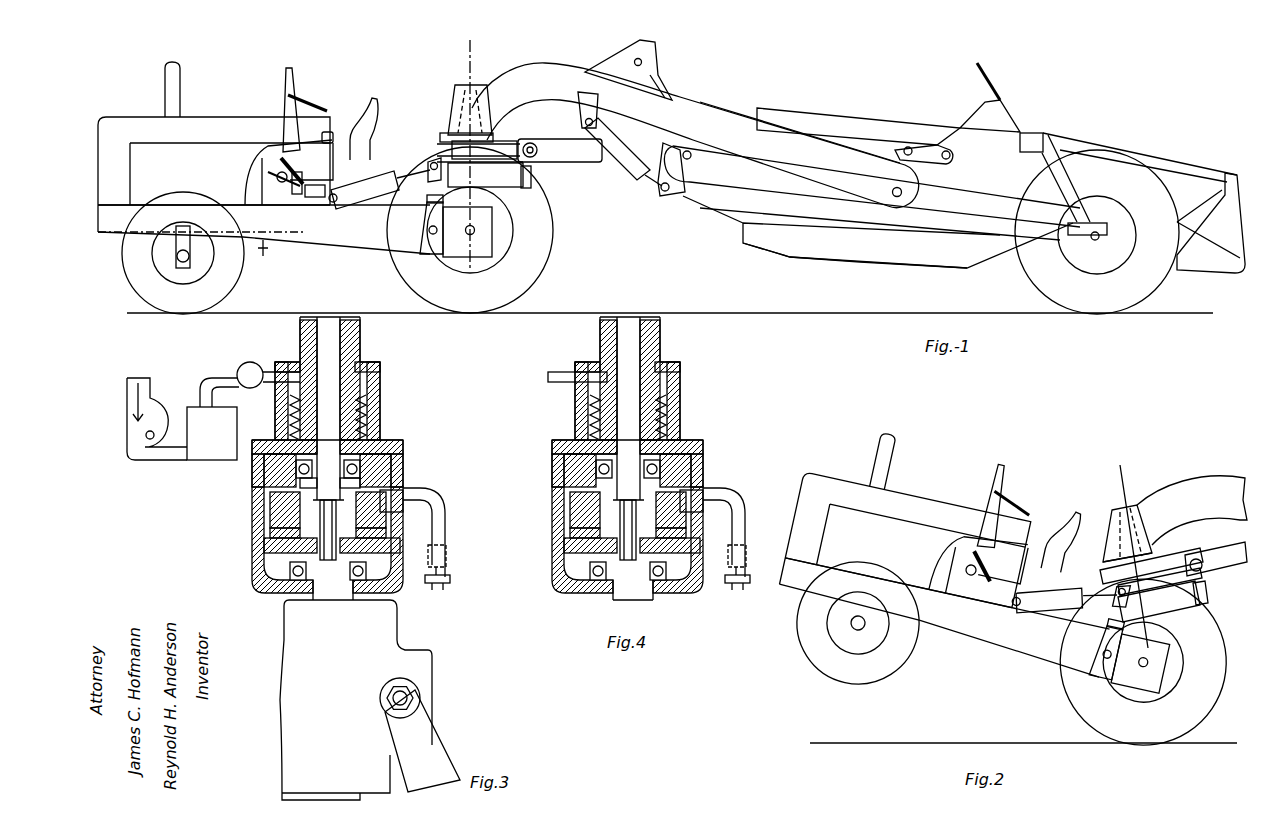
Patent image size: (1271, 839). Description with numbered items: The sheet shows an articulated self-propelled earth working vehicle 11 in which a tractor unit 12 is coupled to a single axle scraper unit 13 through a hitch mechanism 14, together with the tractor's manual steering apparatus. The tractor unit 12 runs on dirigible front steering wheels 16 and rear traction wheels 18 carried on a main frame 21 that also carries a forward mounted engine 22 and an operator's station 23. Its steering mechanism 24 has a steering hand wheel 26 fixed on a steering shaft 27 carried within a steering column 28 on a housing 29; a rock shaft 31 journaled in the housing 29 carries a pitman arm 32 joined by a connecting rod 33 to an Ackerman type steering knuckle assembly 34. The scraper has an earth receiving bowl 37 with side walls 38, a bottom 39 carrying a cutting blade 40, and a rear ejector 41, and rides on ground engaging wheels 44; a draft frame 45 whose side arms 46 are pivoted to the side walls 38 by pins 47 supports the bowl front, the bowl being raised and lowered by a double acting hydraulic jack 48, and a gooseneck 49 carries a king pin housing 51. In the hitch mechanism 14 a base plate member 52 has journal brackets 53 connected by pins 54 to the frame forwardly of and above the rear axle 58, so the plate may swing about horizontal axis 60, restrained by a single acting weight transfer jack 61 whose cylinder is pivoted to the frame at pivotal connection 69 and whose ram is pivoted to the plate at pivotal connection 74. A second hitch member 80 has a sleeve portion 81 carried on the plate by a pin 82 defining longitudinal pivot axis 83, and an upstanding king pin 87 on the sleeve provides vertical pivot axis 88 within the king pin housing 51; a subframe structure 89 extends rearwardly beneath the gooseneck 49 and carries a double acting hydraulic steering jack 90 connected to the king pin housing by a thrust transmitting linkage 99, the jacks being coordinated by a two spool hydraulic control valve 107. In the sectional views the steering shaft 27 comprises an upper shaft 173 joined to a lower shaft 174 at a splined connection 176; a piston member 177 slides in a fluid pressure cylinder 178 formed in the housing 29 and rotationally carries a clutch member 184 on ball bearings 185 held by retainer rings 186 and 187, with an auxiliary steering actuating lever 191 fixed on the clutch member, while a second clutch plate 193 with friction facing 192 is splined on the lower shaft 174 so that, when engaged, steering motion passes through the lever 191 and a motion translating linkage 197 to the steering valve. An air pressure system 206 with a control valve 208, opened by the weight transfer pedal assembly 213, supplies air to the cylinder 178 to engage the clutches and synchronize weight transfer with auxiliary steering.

In FIG. 1, the articulated self-propelled earth working vehicle 11 is at (656, 258).
In FIG. 1, the tractor unit 12 is at (125, 117).
In FIG. 2, the tractor unit 12 is at (830, 472).
In FIG. 1, the scraper unit 13 is at (872, 266).
In FIG. 1, the hitch mechanism 14 is at (455, 85).
In FIG. 2, the hitch mechanism 14 is at (1205, 612).
In FIG. 1, the front dirigible steering wheels 16 is at (127, 290).
In FIG. 2, the front dirigible steering wheels 16 is at (810, 655).
In FIG. 1, the driving or traction wheels 18 is at (535, 292).
In FIG. 2, the driving or traction wheels 18 is at (1080, 717).
In FIG. 1, the main frame 21 is at (326, 252).
In FIG. 2, the main frame 21 is at (978, 647).
In FIG. 1, the engine 22 is at (175, 152).
In FIG. 2, the engine 22 is at (890, 505).
In FIG. 1, the operator's station 23 is at (370, 100).
In FIG. 2, the operator's station 23 is at (1060, 515).
In FIG. 1, the steering mechanism 24 is at (262, 150).
In FIG. 2, the steering mechanism 24 is at (1012, 540).
In FIG. 3, the steering mechanism 24 is at (437, 652).
In FIG. 4, the steering mechanism 24 is at (556, 580).
In FIG. 1, the steering hand wheel 26 is at (300, 95).
In FIG. 2, the steering hand wheel 26 is at (1008, 500).
In FIG. 3, the steering post or shaft 27 is at (342, 333).
In FIG. 4, the steering post or shaft 27 is at (642, 333).
In FIG. 1, the steering column 28 is at (328, 132).
In FIG. 3, the steering column 28 is at (300, 321).
In FIG. 4, the steering column 28 is at (600, 321).
In FIG. 3, the housing 29 is at (403, 448).
In FIG. 4, the housing 29 is at (690, 368).
In FIG. 1, the rock shaft 31 is at (277, 180).
In FIG. 3, the rock shaft 31 is at (385, 702).
In FIG. 1, the pitman arm 32 is at (278, 205).
In FIG. 3, the pitman arm 32 is at (440, 748).
In FIG. 1, the connecting rod 33 is at (263, 252).
In FIG. 1, the steering knuckle assembly 34 is at (178, 232).
In FIG. 1, the earth receiving bowl 37 is at (900, 118).
In FIG. 1, the side walls 38 is at (735, 222).
In FIG. 1, the bottom 39 is at (940, 266).
In FIG. 1, the cutting blade 40 is at (790, 268).
In FIG. 1, the ejector 41 is at (1015, 120).
In FIG. 1, the ground engaging wheels 44 is at (1032, 286).
In FIG. 1, the yoke or draft frame 45 is at (712, 103).
In FIG. 1, the side arms 46 is at (790, 172).
In FIG. 1, the pins 47 is at (903, 192).
In FIG. 1, the double acting hydraulic jack 48 is at (660, 190).
In FIG. 1, the gooseneck 49 is at (546, 65).
In FIG. 2, the gooseneck 49 is at (1210, 477).
In FIG. 1, the king pin housing 51 is at (450, 97).
In FIG. 2, the king pin housing 51 is at (1112, 520).
In FIG. 1, the base plate member 52 is at (427, 205).
In FIG. 2, the base plate member 52 is at (1098, 622).
In FIG. 1, the journal brackets 53 is at (427, 231).
In FIG. 2, the journal brackets 53 is at (1105, 655).
In FIG. 1, the pins 54 is at (429, 263).
In FIG. 2, the pins 54 is at (1105, 672).
In FIG. 1, the rear axle 58 is at (474, 233).
In FIG. 2, the rear axle 58 is at (1150, 667).
In FIG. 1, the horizontal axis 60 is at (466, 233).
In FIG. 2, the horizontal axis 60 is at (1147, 669).
In FIG. 1, the single acting hydraulic weight transfer jack 61 is at (367, 200).
In FIG. 2, the single acting hydraulic weight transfer jack 61 is at (1045, 612).
In FIG. 1, the pivotal connection 69 is at (335, 203).
In FIG. 1, the pivotal connection 74 is at (430, 175).
In FIG. 1, the second hitch member 80 is at (520, 164).
In FIG. 1, the sleeve portion 81 is at (500, 188).
In FIG. 1, the pin 82 is at (540, 185).
In FIG. 1, the horizontal pivot axis 83 is at (448, 160).
In FIG. 2, the horizontal pivot axis 83 is at (1212, 590).
In FIG. 1, the king pin 87 is at (455, 112).
In FIG. 2, the king pin 87 is at (1112, 538).
In FIG. 1, the vertical pivot axis 88 is at (472, 40).
In FIG. 2, the vertical pivot axis 88 is at (1121, 465).
In FIG. 1, the subframe structure 89 is at (540, 141).
In FIG. 1, the double acting hydraulic steering jack 90 is at (600, 162).
In FIG. 2, the double acting hydraulic steering jack 90 is at (1232, 540).
In FIG. 1, the thrust transmitting linkage 99 is at (505, 140).
In FIG. 1, the two spool hydraulic control valve 107 is at (314, 198).
In FIG. 3, the upper shaft 173 is at (345, 352).
In FIG. 4, the upper shaft 173 is at (645, 350).
In FIG. 3, the lower shaft 174 is at (330, 598).
In FIG. 4, the lower shaft 174 is at (630, 596).
In FIG. 3, the splined connection 176 is at (337, 520).
In FIG. 4, the splined connection 176 is at (637, 520).
In FIG. 3, the piston member 177 is at (380, 382).
In FIG. 4, the piston member 177 is at (680, 385).
In FIG. 3, the fluid pressure cylinder 178 is at (368, 420).
In FIG. 4, the fluid pressure cylinder 178 is at (668, 420).
In FIG. 3, the clutch member 184 is at (272, 500).
In FIG. 4, the clutch member 184 is at (572, 505).
In FIG. 3, the ball bearings 185 is at (392, 470).
In FIG. 4, the ball bearings 185 is at (692, 470).
In FIG. 3, the retainer ring 186 is at (312, 478).
In FIG. 3, the retainer ring 187 is at (348, 478).
In FIG. 3, the auxiliary steering actuating lever 191 is at (440, 515).
In FIG. 4, the auxiliary steering actuating lever 191 is at (738, 512).
In FIG. 3, the friction facing 192 is at (278, 530).
In FIG. 4, the friction facing 192 is at (578, 530).
In FIG. 3, the second clutch plate 193 is at (275, 545).
In FIG. 4, the second clutch plate 193 is at (575, 545).
In FIG. 3, the motion translating linkage 197 is at (445, 578).
In FIG. 4, the motion translating linkage 197 is at (740, 585).
In FIG. 3, the air pressure system 206 is at (195, 380).
In FIG. 3, the control valve 208 is at (247, 362).
In FIG. 1, the pedal assembly 213 is at (296, 172).